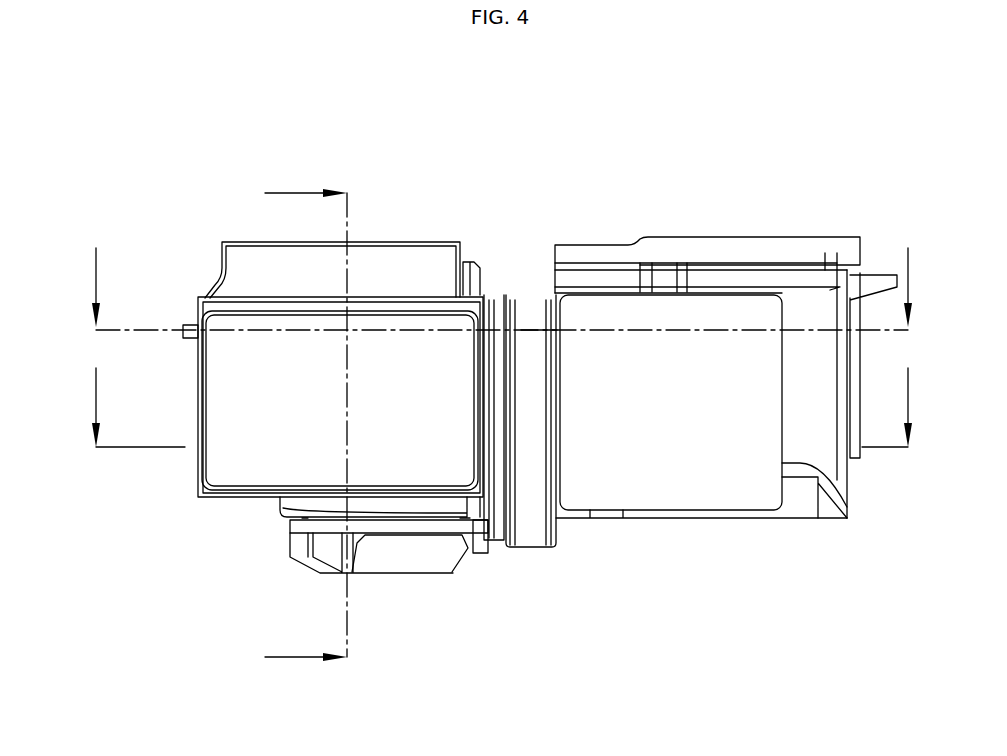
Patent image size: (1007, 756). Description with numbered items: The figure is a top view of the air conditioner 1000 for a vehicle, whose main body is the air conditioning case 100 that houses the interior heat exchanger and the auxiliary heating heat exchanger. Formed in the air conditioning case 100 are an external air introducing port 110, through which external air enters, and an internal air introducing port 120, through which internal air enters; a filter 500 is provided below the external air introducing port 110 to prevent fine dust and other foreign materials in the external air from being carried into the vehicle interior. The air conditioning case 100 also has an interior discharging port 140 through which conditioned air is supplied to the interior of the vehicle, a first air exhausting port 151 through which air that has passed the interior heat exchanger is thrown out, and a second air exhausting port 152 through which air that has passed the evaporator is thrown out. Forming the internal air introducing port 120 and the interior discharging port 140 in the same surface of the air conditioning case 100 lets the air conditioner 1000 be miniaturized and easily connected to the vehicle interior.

The air conditioner for a vehicle 1000 is at (148, 136).
The air conditioning case 100 is at (612, 483).
The external air introducing port 110 is at (292, 470).
The internal air introducing port 120 is at (433, 242).
The interior discharging port 140 is at (752, 237).
The first air exhausting port 151 is at (860, 432).
The second air exhausting port 152 is at (847, 518).
The filter 500 is at (227, 472).